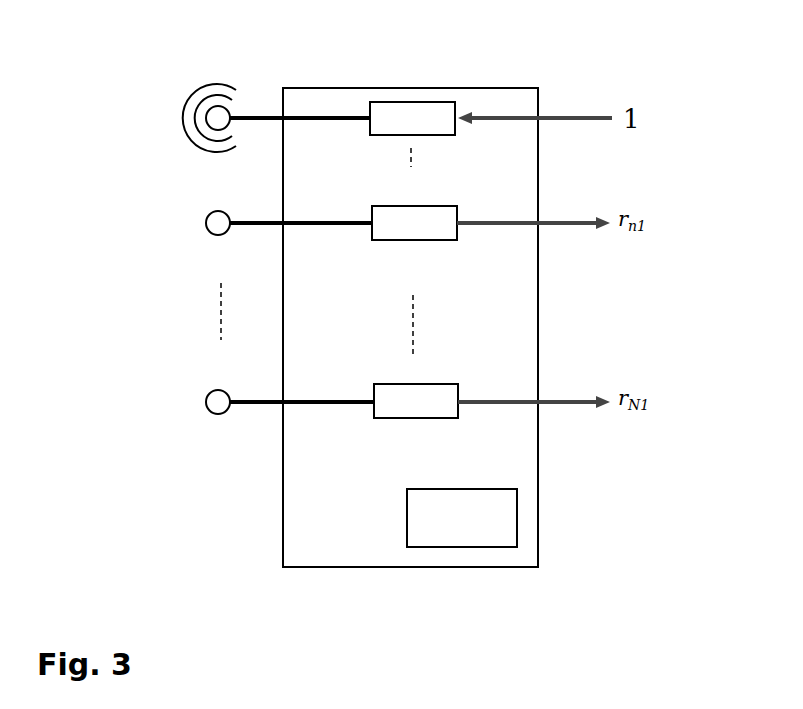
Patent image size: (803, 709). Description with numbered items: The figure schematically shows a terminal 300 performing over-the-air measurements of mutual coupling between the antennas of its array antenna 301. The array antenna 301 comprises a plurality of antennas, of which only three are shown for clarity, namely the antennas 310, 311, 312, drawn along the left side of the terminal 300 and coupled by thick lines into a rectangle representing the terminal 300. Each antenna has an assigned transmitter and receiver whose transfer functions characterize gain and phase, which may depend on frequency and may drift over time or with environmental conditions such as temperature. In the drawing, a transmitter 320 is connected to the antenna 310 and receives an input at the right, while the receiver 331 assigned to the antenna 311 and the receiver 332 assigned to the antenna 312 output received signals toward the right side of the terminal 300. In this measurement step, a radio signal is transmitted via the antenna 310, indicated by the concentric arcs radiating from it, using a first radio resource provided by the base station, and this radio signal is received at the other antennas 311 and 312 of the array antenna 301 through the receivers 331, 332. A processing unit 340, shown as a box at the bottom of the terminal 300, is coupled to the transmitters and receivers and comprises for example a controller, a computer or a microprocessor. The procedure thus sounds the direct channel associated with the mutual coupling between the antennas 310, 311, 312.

The terminal 300 is at (380, 88).
The array antenna 301 is at (216, 59).
The antenna 310 is at (205, 117).
The antenna 311 is at (205, 215).
The antenna 312 is at (205, 395).
The transmitter 320 is at (457, 132).
The receiver 331 is at (457, 233).
The receiver 332 is at (458, 412).
The processing unit 340 is at (406, 520).